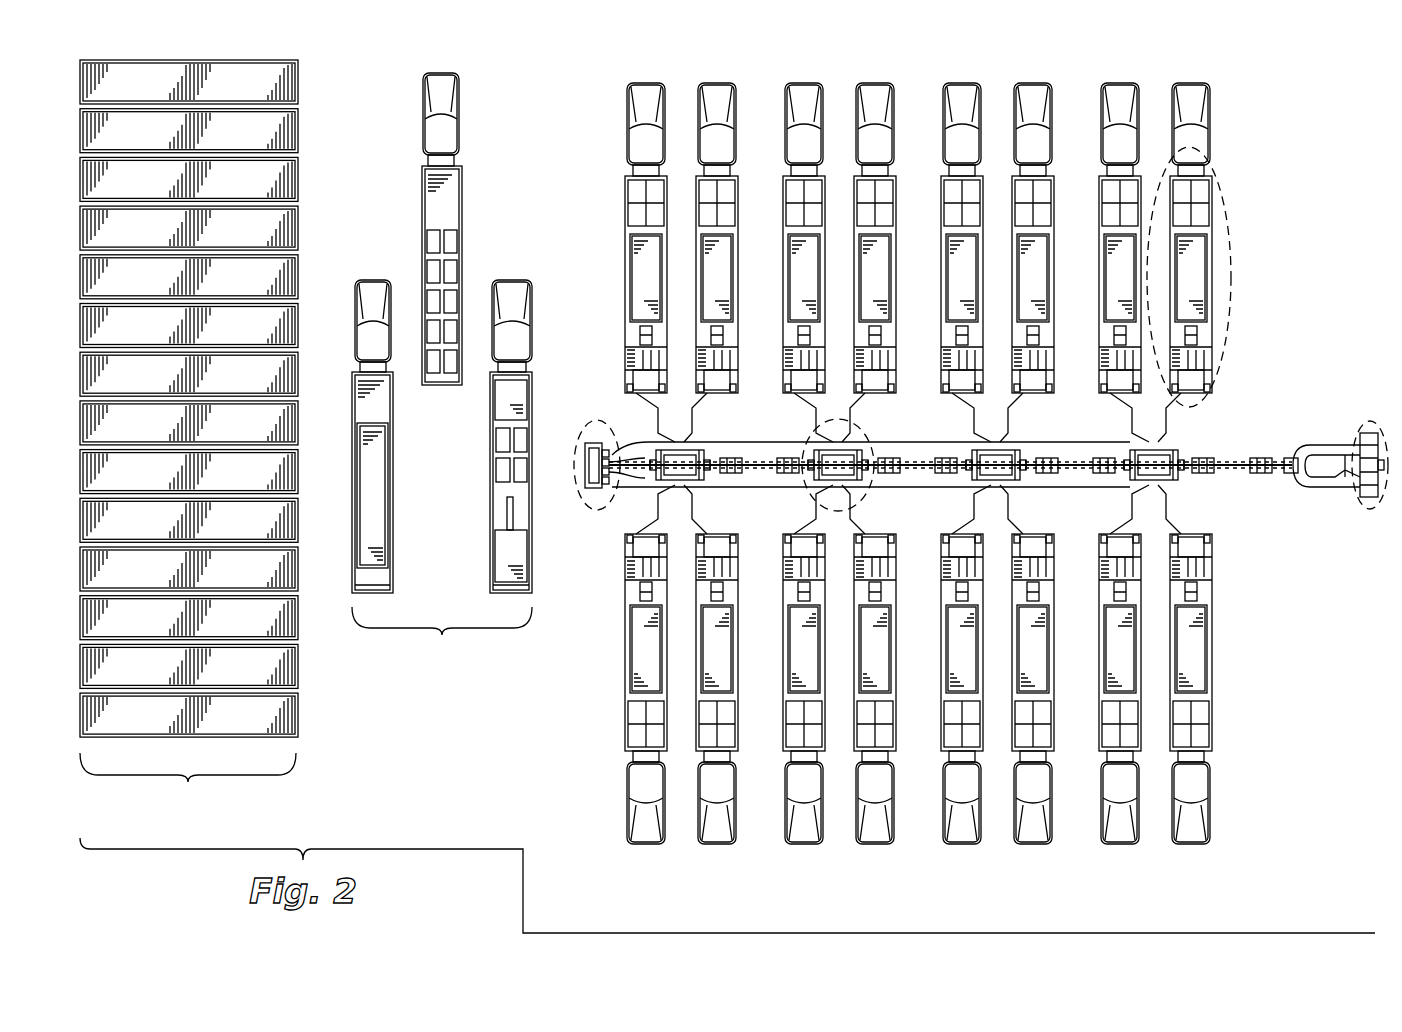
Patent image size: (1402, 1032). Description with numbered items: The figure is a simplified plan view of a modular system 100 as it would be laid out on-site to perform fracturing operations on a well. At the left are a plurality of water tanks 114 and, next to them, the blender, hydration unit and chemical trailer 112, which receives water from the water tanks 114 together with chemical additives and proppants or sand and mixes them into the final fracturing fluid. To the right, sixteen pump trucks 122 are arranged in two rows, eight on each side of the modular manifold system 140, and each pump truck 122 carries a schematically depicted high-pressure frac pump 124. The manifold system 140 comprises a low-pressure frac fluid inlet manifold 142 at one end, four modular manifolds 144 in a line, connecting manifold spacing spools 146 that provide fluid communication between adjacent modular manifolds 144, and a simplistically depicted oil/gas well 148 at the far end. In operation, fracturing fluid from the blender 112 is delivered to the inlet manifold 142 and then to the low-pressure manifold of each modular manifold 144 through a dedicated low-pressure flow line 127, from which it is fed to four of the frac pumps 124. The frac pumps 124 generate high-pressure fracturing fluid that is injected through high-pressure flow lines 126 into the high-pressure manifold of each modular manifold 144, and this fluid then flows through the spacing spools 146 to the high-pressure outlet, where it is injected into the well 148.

The modular system 100 is at (1245, 117).
The blender, hydration unit and chemical trailer 112 is at (442, 637).
The water tanks 114 is at (188, 784).
The pump trucks 122 is at (647, 83).
The high-pressure frac pump 124 is at (1232, 272).
The high-pressure flow lines 126 is at (694, 412).
The low-pressure flow line 127 is at (790, 488).
The modular manifold system 140 is at (1228, 481).
The low-pressure frac fluid inlet manifold 142 is at (592, 509).
The modular manifolds 144 is at (858, 432).
The connecting manifold spacing spools 146 is at (910, 475).
The oil/gas well 148 is at (1358, 432).